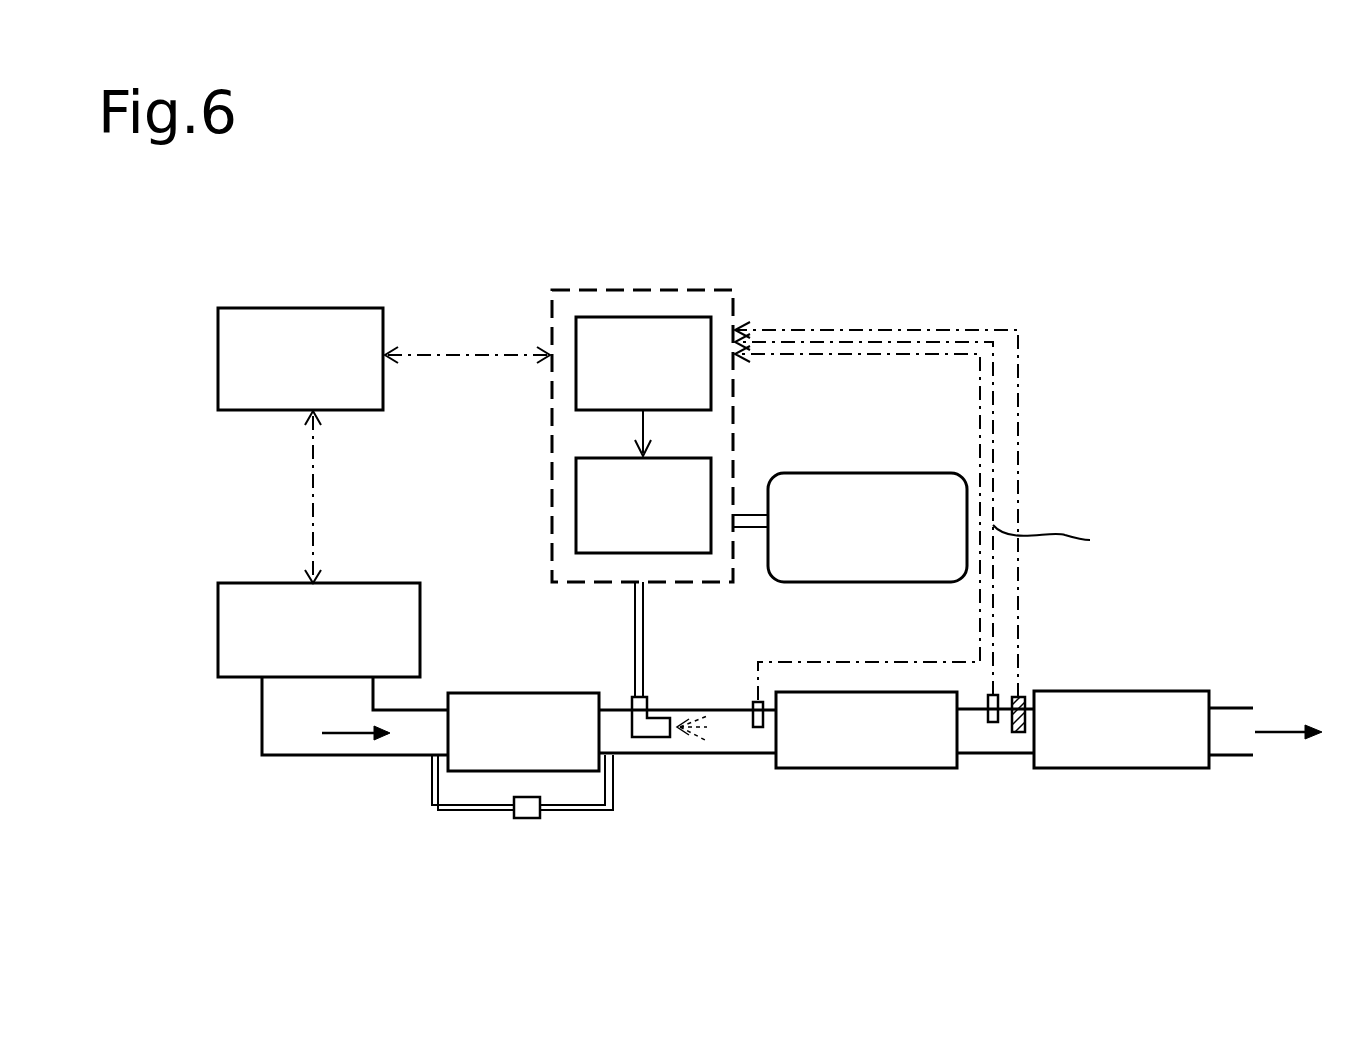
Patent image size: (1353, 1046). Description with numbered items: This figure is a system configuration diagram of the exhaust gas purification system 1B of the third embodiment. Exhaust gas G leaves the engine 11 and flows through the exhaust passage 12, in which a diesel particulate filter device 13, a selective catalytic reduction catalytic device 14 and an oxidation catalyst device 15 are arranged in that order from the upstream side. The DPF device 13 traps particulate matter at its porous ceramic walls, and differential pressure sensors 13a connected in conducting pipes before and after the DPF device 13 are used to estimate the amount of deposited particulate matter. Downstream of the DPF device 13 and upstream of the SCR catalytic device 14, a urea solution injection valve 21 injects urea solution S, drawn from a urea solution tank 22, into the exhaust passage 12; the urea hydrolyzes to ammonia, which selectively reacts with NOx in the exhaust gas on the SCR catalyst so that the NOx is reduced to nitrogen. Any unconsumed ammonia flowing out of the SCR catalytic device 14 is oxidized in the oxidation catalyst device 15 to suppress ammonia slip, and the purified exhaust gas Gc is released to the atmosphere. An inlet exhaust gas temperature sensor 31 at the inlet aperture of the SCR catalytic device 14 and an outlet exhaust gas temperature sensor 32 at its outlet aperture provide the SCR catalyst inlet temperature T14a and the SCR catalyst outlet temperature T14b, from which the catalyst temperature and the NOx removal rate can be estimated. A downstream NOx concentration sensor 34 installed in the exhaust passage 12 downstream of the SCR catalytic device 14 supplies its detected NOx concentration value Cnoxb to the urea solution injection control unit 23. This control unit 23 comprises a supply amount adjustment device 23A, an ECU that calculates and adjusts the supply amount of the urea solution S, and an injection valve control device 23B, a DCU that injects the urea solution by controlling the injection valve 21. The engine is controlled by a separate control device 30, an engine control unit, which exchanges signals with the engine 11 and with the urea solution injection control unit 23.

The exhaust gas purification system 1B is at (945, 308).
The engine 11 is at (387, 583).
The exhaust passage 12 is at (345, 757).
The diesel particulate filter device 13 is at (523, 693).
The differential pressure sensors 13a is at (523, 818).
The selective catalytic reduction catalytic device 14 is at (865, 768).
The oxidation catalyst device 15 is at (1137, 768).
The urea solution injection valve 21 is at (650, 737).
The urea solution tank 22 is at (858, 467).
The urea solution injection control unit 23 is at (735, 305).
The supply amount adjustment device 23A is at (711, 377).
The injection valve control device 23B is at (711, 482).
The control device 30 is at (360, 307).
The inlet exhaust gas temperature sensor 31 is at (755, 730).
The outlet exhaust gas temperature sensor 32 is at (990, 725).
The downstream NOx concentration sensor 34 is at (1020, 735).
The SCR catalyst inlet temperature T14a is at (857, 523).
The SCR catalyst outlet temperature T14b is at (944, 514).
The NOx concentration value Cnoxb is at (917, 509).
The exhaust gas G is at (356, 717).
The purified exhaust gas Gc is at (1288, 711).
The urea solution S is at (705, 730).